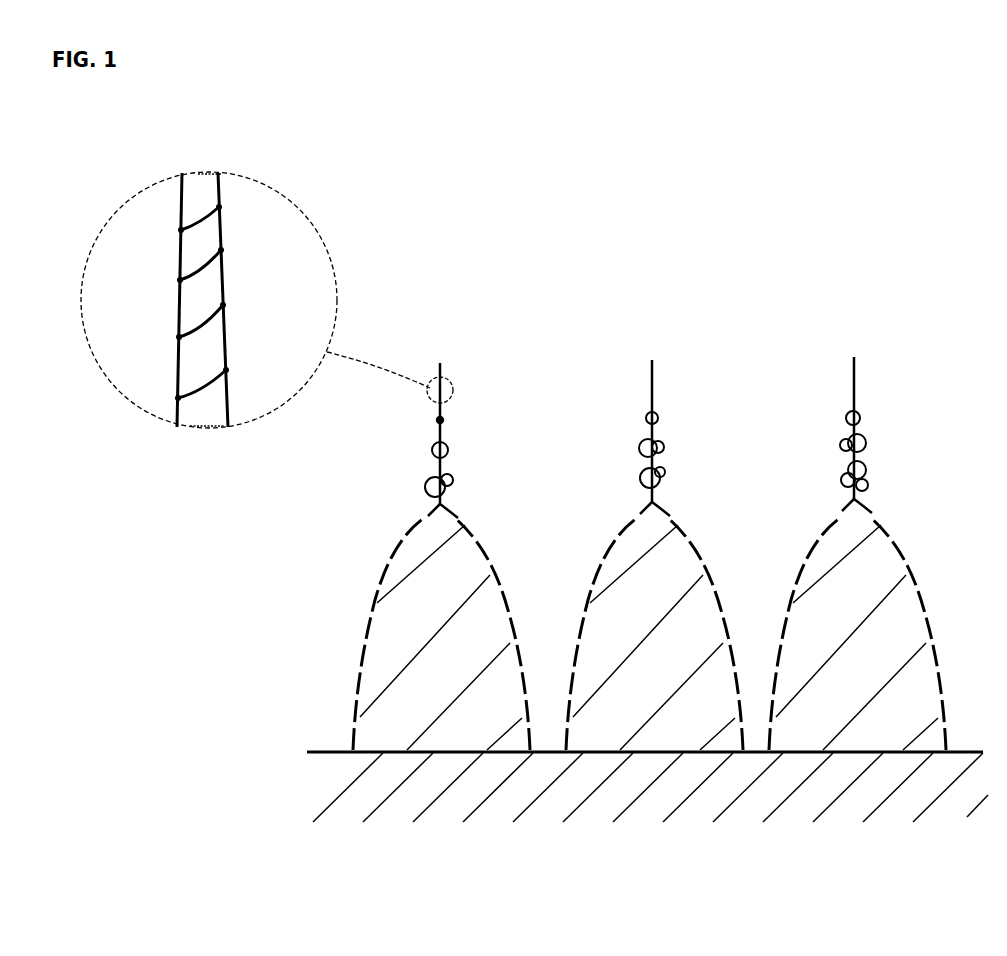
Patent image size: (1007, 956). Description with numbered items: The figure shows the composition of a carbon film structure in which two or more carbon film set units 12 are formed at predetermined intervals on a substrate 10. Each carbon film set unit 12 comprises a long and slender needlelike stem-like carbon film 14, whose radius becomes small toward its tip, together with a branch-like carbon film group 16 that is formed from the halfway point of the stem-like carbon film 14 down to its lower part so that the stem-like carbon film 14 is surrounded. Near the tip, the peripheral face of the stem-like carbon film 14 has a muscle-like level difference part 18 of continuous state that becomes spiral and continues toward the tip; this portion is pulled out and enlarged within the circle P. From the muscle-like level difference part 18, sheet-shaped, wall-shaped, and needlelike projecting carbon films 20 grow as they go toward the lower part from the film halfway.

The substrate 10 is at (333, 750).
The carbon film set unit 12 is at (937, 253).
The stem-like carbon film 14 is at (937, 367).
The branch-like carbon film group 16 is at (780, 653).
The muscle-like level difference part 18 is at (227, 303).
The carbon film 20 is at (420, 480).
The circle p is at (153, 428).